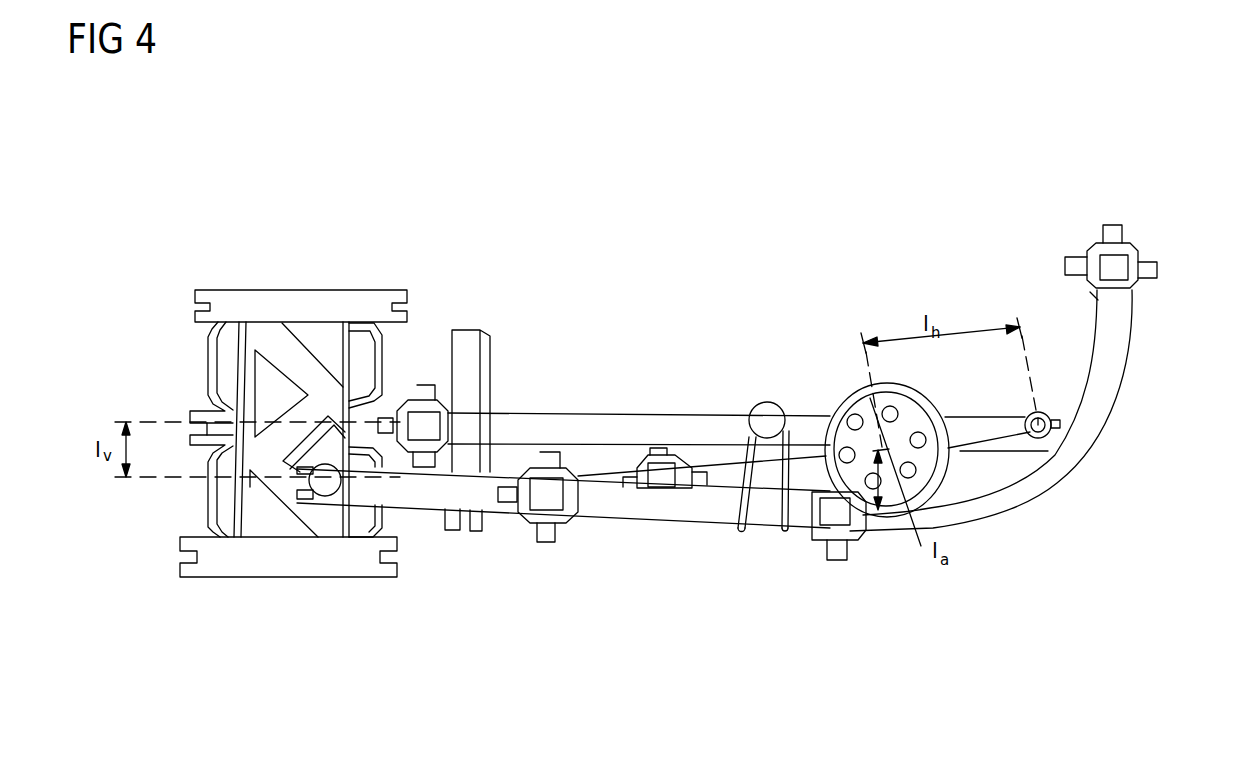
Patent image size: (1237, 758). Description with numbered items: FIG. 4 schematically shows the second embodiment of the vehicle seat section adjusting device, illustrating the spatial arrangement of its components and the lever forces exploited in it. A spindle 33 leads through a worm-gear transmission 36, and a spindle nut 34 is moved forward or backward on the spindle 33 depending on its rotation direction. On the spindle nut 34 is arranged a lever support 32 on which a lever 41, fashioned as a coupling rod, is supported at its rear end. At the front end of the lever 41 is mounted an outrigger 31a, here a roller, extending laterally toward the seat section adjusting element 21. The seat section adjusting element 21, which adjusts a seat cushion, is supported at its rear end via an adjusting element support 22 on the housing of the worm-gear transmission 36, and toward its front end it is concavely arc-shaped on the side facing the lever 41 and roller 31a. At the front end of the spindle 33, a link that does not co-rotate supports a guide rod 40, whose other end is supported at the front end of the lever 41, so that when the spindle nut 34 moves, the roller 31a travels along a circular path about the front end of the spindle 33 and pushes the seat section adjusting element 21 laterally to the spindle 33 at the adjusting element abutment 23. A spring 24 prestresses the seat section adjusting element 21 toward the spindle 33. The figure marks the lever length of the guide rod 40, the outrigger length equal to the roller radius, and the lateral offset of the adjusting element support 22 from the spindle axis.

The seat section adjusting element 21 is at (1058, 456).
The adjusting element support 22 is at (323, 490).
The adjusting element abutment 23 is at (1117, 323).
The spring 24 is at (747, 436).
The outrigger 31a is at (845, 396).
The lever support 32 is at (493, 528).
The spindle 33 is at (570, 420).
The spindle nut 34 is at (471, 345).
The worm-gear transmission 36 is at (270, 300).
The guide rod 40 is at (1002, 433).
The lever 41 is at (620, 478).